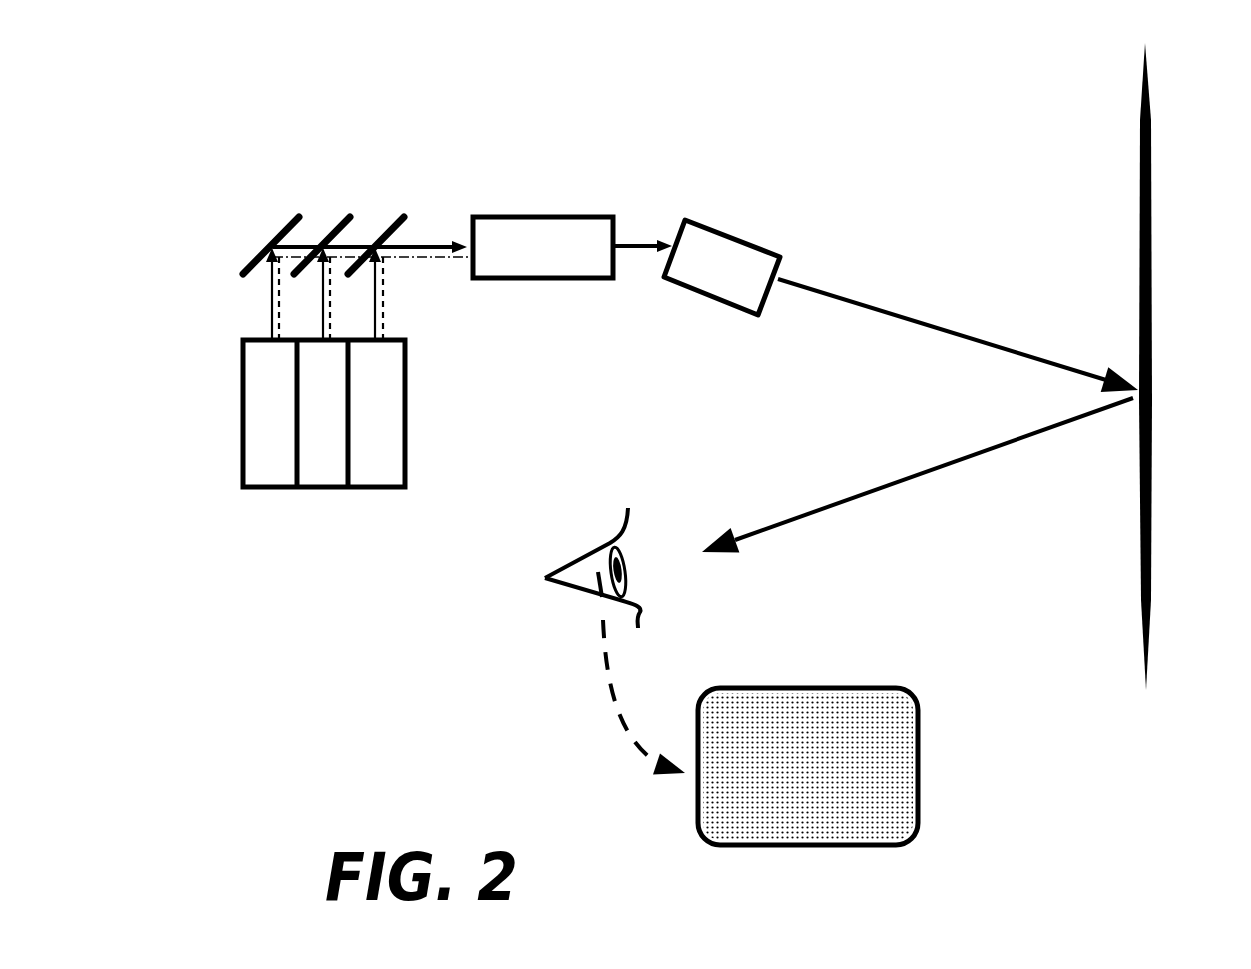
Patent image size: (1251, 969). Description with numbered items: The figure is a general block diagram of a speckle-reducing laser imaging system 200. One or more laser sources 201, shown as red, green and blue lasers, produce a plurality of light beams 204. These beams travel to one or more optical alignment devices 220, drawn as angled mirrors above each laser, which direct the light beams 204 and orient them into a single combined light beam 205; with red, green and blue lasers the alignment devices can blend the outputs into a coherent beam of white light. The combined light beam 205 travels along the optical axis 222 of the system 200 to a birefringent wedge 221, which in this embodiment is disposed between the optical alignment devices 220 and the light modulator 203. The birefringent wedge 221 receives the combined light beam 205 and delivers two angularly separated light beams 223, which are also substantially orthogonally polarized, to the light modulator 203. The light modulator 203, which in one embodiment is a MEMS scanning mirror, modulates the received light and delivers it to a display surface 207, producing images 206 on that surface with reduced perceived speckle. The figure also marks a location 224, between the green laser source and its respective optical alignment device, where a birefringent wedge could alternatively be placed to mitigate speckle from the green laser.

The speckle-reducing laser imaging system 200 is at (258, 705).
The laser sources 201 is at (312, 518).
The light modulator 203 is at (738, 237).
The light beams 204 is at (377, 323).
The combined light beam 205 is at (422, 253).
The images 206 is at (922, 750).
The display surface 207 is at (1157, 518).
The optical alignment devices 220 is at (383, 230).
The birefringent wedge 221 is at (542, 247).
The optical axis 222 is at (422, 253).
The angularly separated light beams 223 is at (637, 240).
The location 224 is at (346, 310).